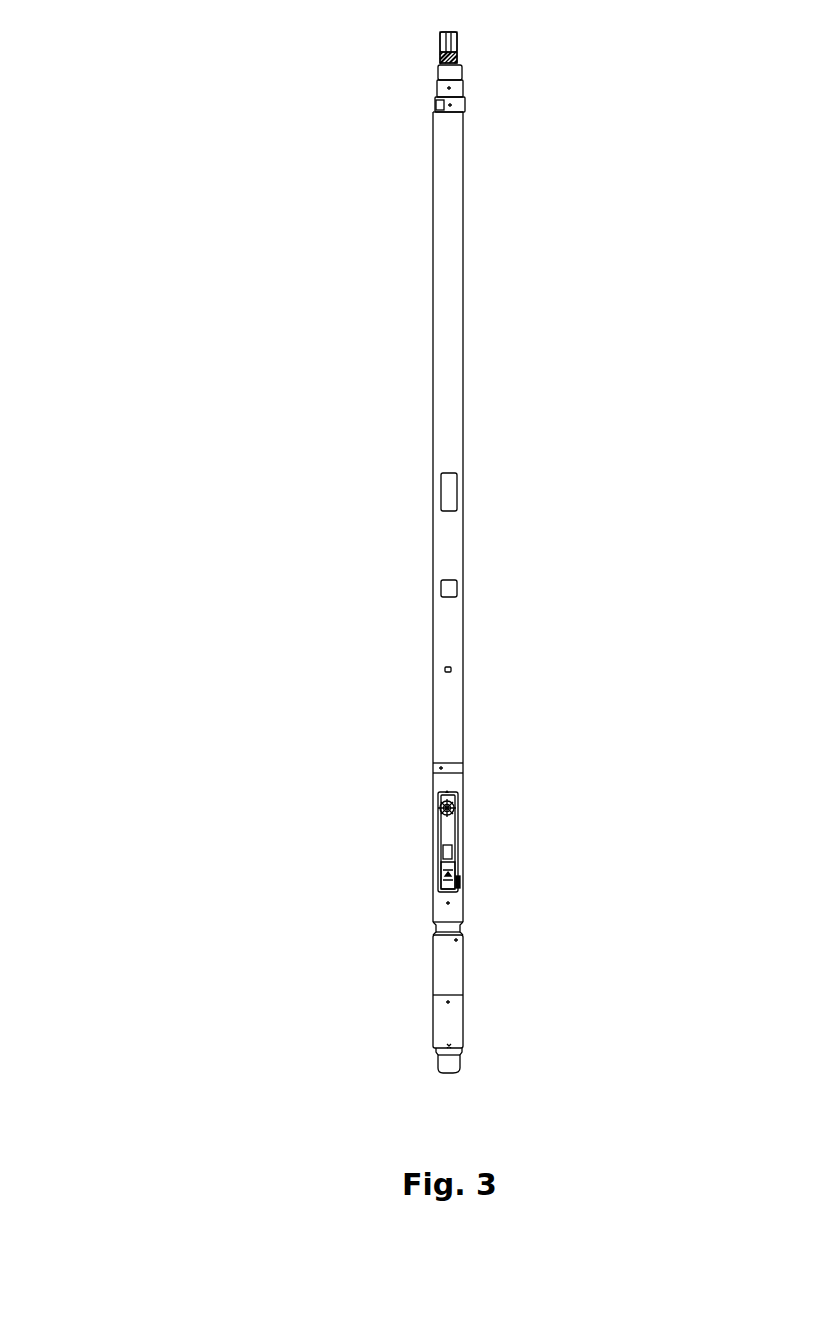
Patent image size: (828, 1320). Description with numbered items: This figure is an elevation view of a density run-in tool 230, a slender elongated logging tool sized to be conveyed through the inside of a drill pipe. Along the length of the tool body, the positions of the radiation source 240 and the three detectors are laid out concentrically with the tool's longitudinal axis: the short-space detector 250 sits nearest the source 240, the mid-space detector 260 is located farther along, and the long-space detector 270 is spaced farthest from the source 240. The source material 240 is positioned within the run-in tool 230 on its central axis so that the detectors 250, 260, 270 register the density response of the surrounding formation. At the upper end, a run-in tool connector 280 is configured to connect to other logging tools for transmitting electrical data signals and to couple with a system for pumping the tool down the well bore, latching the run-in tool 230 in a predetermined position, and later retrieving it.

The density run-in tool 230 is at (254, 142).
The source 240 is at (438, 850).
The short-space detector 250 is at (452, 672).
The mid-space detector 260 is at (449, 590).
The long-space detector 270 is at (449, 494).
The run-in tool connector 280 is at (475, 46).